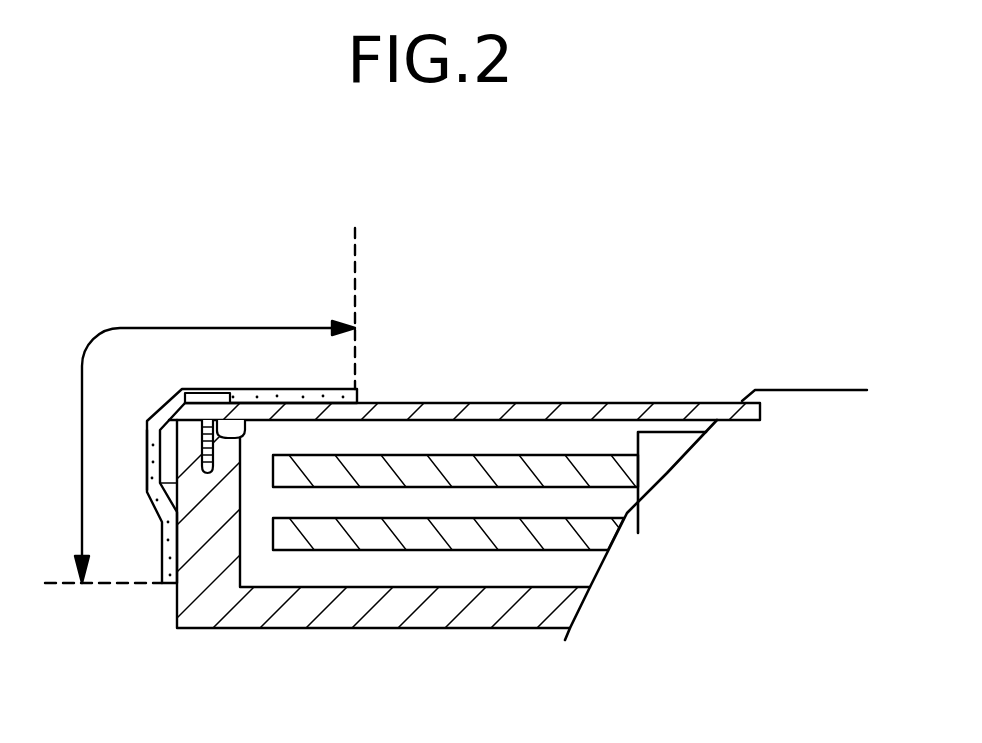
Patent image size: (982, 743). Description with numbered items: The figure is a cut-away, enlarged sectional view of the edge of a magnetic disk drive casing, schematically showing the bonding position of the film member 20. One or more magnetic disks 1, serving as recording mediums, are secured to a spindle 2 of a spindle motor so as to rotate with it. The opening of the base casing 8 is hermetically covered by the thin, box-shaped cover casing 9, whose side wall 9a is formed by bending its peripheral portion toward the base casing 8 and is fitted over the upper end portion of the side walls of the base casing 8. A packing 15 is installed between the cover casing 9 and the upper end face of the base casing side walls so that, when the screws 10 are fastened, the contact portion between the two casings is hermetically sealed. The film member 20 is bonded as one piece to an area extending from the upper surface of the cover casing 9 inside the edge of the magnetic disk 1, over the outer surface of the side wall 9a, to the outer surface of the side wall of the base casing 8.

The magnetic disk 1 is at (413, 472).
The spindle 2 is at (655, 440).
The base casing 8 is at (336, 613).
The cover casing 9 is at (596, 402).
The side wall 9a is at (147, 484).
The screw 10 is at (208, 393).
The packing 15 is at (257, 440).
The film member 20 is at (150, 414).